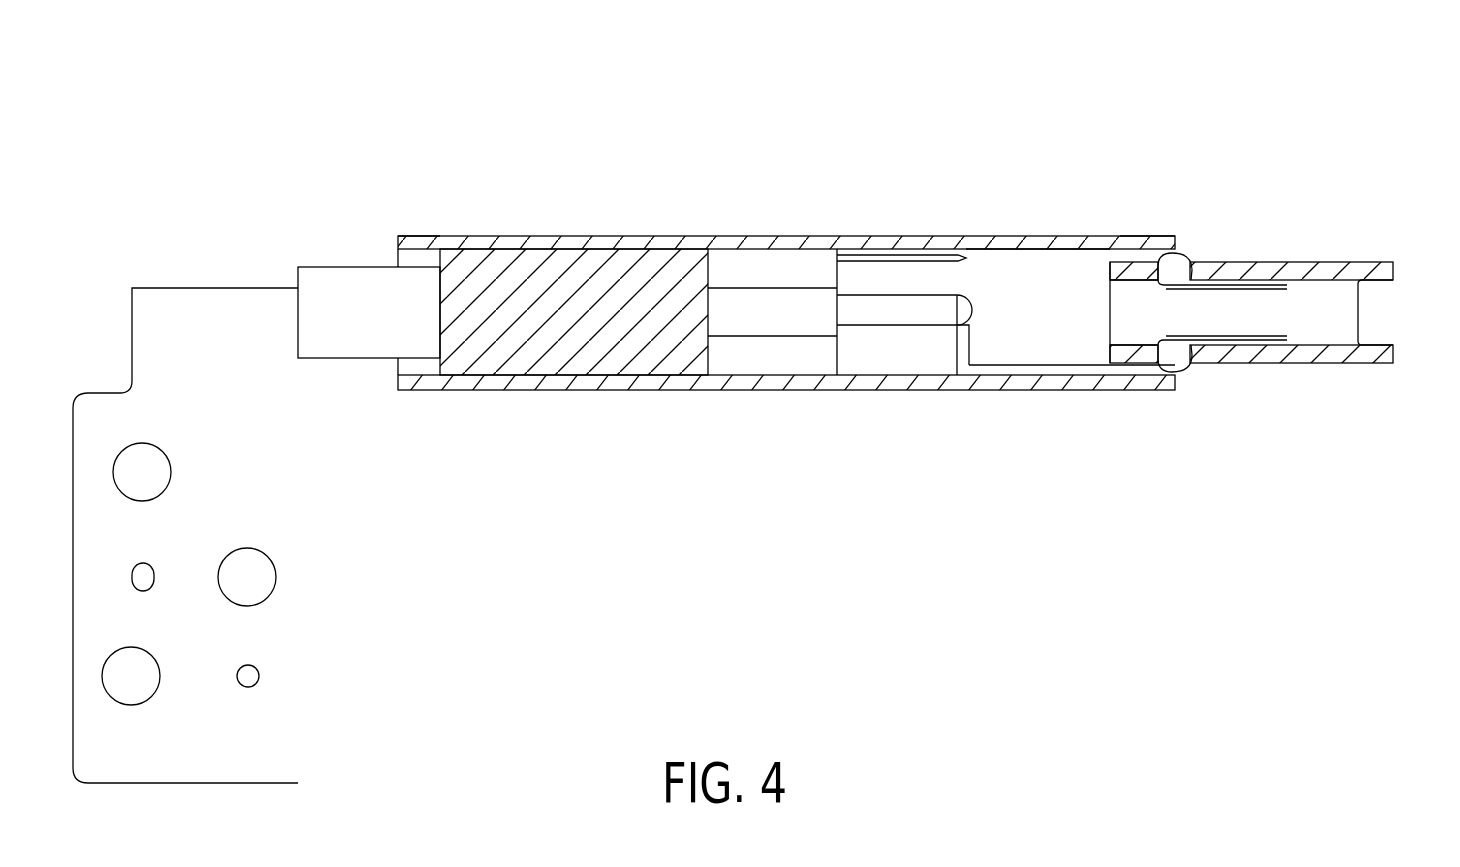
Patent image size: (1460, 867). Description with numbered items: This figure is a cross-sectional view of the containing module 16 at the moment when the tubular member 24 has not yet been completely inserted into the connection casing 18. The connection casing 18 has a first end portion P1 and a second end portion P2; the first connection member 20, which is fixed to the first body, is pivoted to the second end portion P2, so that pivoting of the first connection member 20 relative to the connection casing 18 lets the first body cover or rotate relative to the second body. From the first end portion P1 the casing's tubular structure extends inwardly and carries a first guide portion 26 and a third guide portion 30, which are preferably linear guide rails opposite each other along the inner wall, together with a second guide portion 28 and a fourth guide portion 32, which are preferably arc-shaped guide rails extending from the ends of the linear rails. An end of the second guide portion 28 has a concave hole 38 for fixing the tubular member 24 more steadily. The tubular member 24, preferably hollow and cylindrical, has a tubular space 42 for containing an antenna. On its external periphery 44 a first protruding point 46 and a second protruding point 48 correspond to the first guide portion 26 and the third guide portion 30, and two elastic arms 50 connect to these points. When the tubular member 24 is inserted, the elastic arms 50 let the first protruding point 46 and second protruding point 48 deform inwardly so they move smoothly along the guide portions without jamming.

The containing module 16 is at (874, 247).
The connection casing 18 is at (745, 235).
The first connection member 20 is at (183, 298).
The tubular member 24 is at (1280, 315).
The first guide portion 26 is at (1043, 371).
The second guide portion 28 is at (962, 366).
The third guide portion 30 is at (1048, 250).
The fourth guide portion 32 is at (962, 250).
The concave hole 38 is at (963, 305).
The tubular space 42 is at (1333, 329).
The external periphery 44 is at (1291, 315).
The first protruding point 46 is at (1185, 371).
The second protruding point 48 is at (1182, 256).
The elastic arms 50 is at (1252, 266).
The first end portion P1 is at (1150, 236).
The second end portion P2 is at (418, 236).